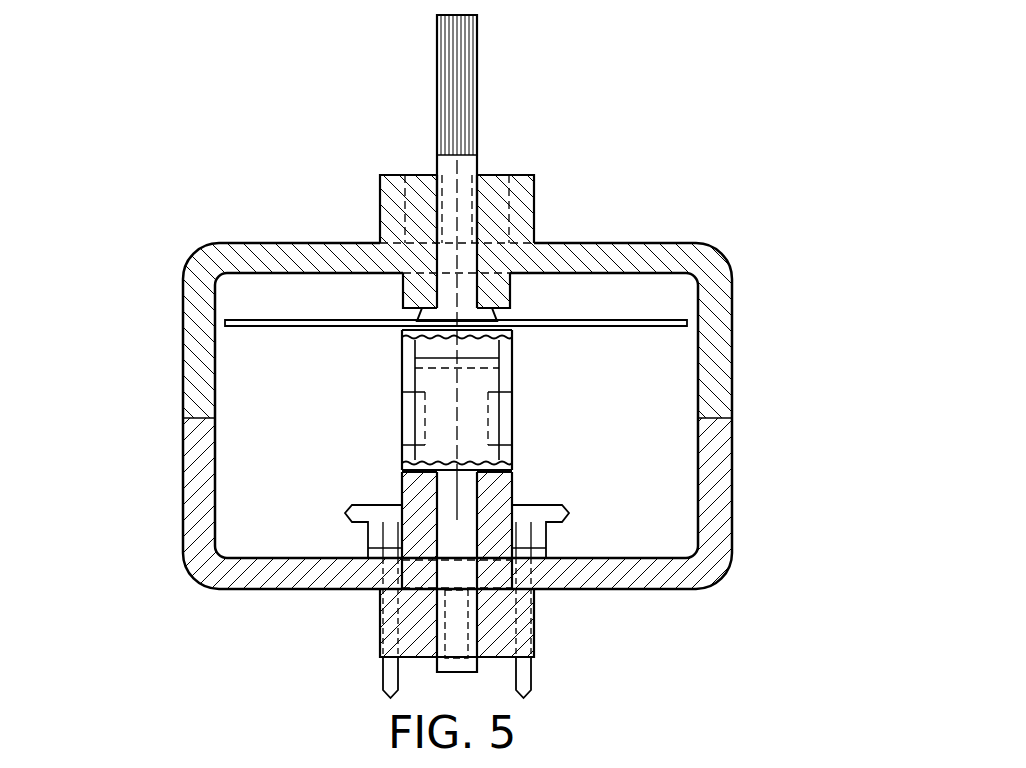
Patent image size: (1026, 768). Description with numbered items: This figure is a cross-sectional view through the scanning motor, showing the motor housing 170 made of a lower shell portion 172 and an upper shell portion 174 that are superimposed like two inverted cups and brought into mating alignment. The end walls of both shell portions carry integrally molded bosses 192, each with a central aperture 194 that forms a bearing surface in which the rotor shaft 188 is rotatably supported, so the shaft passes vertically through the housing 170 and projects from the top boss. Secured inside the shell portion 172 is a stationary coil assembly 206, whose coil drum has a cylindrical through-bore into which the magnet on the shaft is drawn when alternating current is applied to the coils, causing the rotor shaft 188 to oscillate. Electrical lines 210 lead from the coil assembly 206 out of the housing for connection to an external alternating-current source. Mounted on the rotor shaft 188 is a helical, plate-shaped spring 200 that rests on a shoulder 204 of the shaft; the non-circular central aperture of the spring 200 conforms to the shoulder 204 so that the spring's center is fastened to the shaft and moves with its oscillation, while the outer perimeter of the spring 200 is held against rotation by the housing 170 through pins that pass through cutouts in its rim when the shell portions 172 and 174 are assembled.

The motor housing 170 is at (160, 370).
The lower shell portion 172 is at (732, 508).
The upper shell portion 174 is at (732, 310).
The rotor shaft 188 is at (478, 90).
The boss 192 is at (534, 208).
The central aperture 194 is at (437, 205).
The spiral plate-shaped spring 200 is at (632, 320).
The shoulder 204 is at (420, 313).
The coil assembly 206 is at (422, 582).
The electrical lines 210 is at (388, 697).